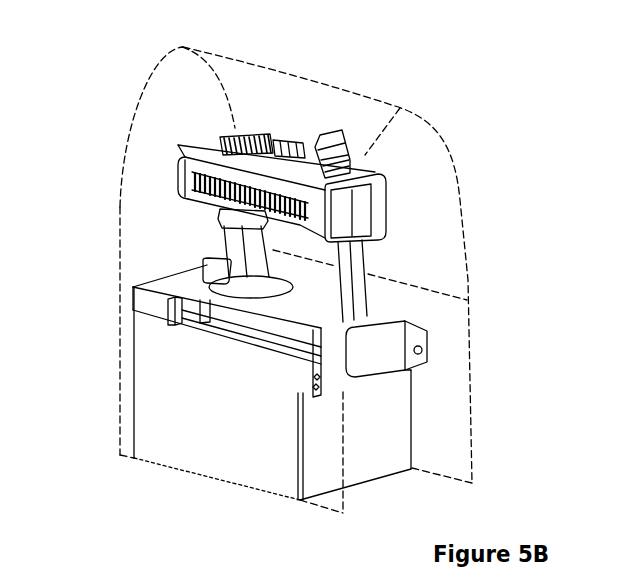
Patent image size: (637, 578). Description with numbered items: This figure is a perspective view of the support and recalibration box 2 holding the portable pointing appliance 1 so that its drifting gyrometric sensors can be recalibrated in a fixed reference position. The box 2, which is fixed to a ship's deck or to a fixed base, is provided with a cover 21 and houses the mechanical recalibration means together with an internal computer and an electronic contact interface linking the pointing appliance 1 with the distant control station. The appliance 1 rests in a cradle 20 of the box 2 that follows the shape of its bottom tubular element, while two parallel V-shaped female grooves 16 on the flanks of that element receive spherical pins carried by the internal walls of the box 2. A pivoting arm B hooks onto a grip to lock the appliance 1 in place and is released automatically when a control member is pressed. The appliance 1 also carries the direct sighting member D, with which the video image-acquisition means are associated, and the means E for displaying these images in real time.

The portable pointing appliance 1 is at (397, 182).
The box 2 is at (375, 437).
The V-shaped female grooves 16 is at (287, 340).
The cradle 20 is at (358, 388).
The cover 21 is at (466, 231).
The arm B is at (155, 299).
The direct sighting member D is at (328, 130).
The means for displaying images E is at (378, 195).